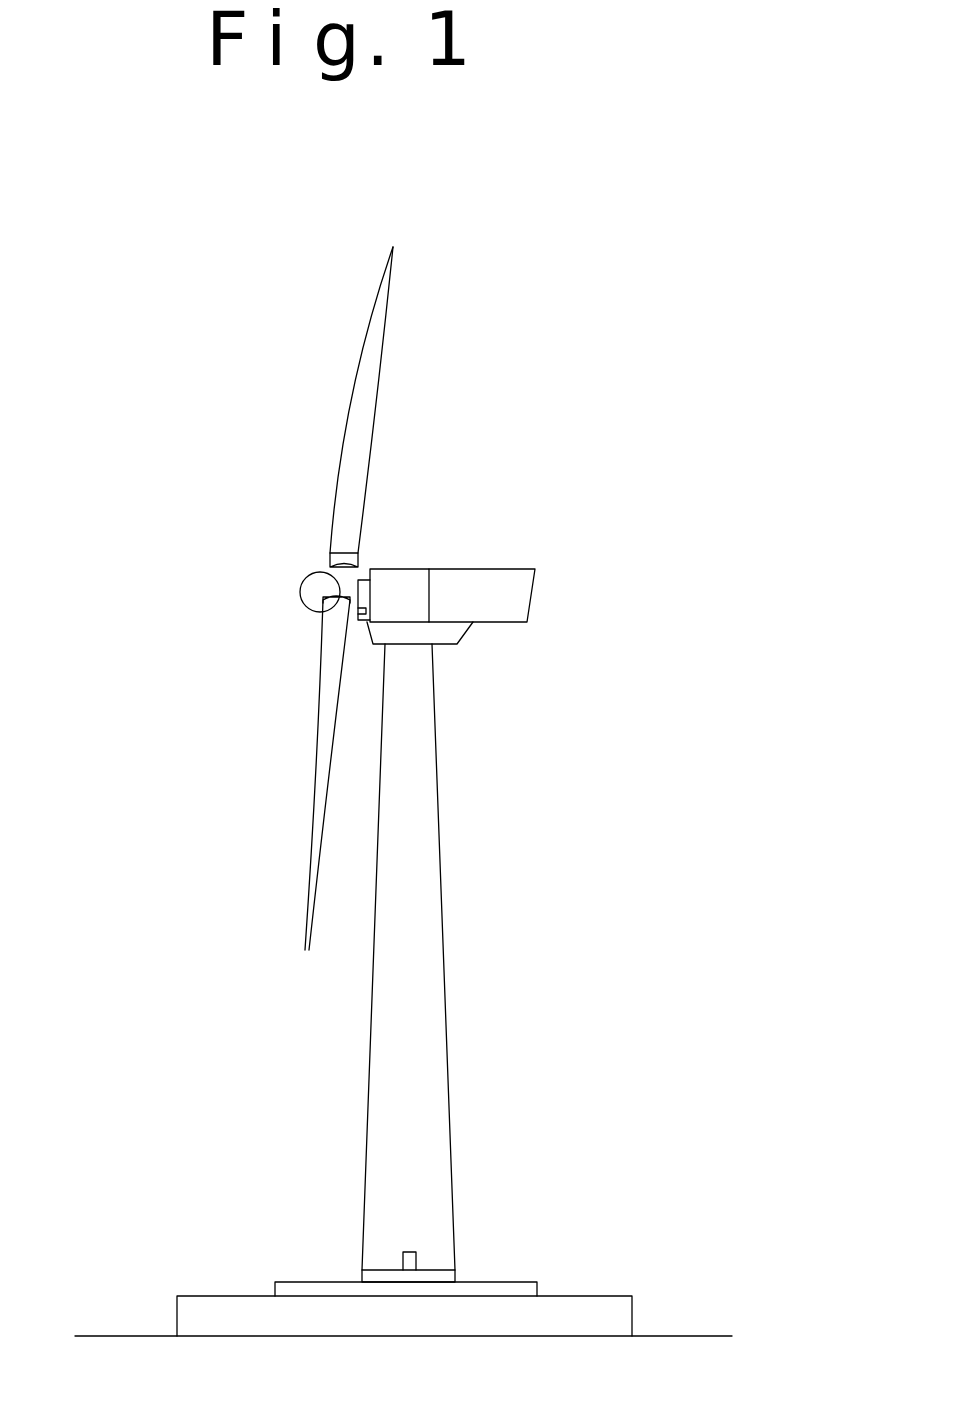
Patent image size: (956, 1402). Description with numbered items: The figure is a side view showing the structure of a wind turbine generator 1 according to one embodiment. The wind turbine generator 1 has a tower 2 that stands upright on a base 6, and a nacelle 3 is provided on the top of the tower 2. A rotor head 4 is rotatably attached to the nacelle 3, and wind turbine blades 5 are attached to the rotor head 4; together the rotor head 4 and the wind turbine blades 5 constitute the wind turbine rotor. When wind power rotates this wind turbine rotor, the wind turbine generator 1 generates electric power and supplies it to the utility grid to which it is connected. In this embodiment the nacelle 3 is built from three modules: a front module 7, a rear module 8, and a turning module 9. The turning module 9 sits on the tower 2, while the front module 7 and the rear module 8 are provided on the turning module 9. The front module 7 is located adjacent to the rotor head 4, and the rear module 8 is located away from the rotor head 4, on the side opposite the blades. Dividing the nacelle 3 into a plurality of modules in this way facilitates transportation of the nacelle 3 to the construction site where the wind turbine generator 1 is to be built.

The wind turbine generator 1 is at (70, 392).
The tower 2 is at (441, 868).
The nacelle 3 is at (489, 490).
The rotor head 4 is at (300, 590).
The wind turbine blades 5 is at (362, 387).
The base 6 is at (580, 1303).
The front module 7 is at (402, 569).
The rear module 8 is at (500, 569).
The turning module 9 is at (457, 629).